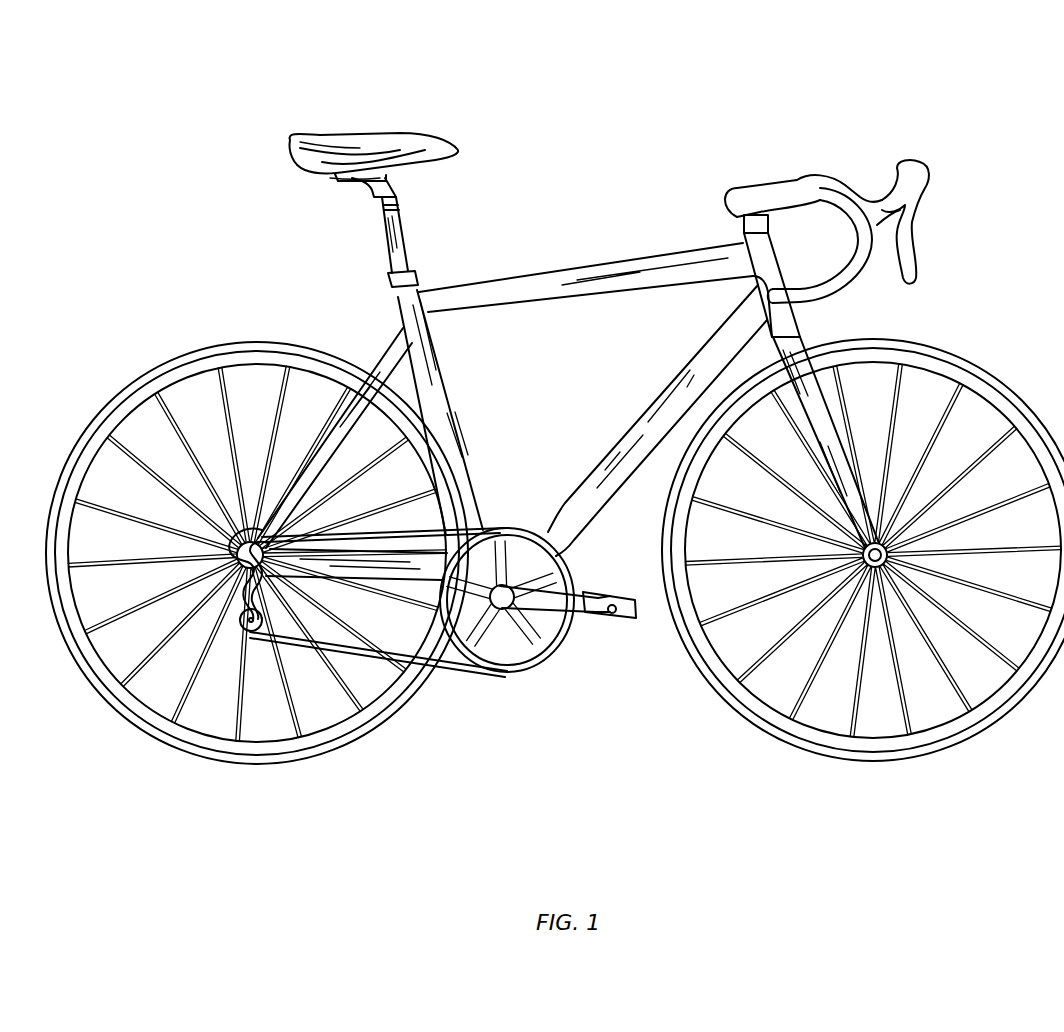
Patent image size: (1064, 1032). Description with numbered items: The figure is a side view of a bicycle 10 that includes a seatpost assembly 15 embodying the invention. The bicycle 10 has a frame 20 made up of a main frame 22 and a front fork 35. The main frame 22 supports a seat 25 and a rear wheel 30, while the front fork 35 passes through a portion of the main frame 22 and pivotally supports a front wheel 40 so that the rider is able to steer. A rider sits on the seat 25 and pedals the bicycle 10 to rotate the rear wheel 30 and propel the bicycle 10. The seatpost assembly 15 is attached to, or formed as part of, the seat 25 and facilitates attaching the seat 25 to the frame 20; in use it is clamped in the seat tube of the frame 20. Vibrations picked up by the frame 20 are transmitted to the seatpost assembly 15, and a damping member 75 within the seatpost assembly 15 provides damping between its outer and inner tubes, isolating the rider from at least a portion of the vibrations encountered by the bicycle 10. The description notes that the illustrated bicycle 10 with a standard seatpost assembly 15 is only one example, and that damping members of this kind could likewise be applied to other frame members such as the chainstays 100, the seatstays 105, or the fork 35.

The bicycle 10 is at (975, 84).
The seatpost assembly 15 is at (388, 255).
The frame 20 is at (520, 294).
The main frame 22 is at (466, 463).
The seat 25 is at (339, 138).
The rear wheel 30 is at (118, 412).
The front fork 35 is at (818, 420).
The front wheel 40 is at (722, 685).
The damping member 75 is at (394, 207).
The chainstays 100 is at (414, 575).
The seatstays 105 is at (380, 358).